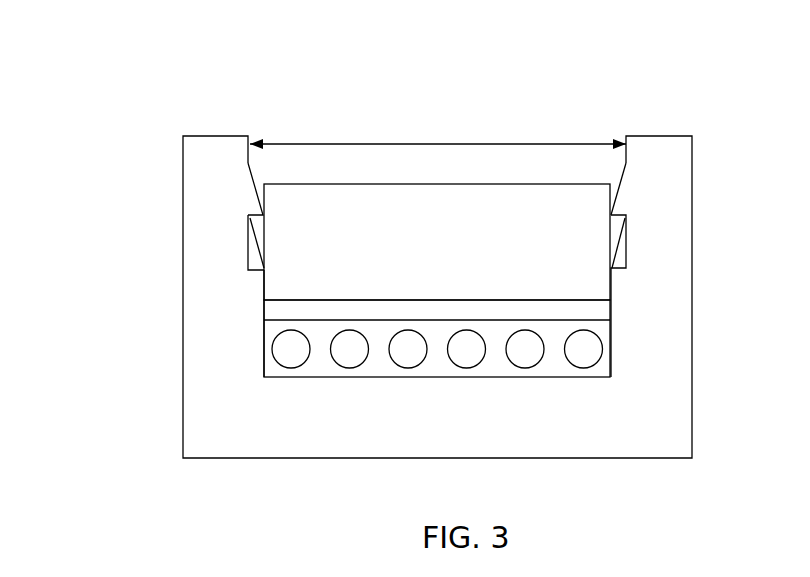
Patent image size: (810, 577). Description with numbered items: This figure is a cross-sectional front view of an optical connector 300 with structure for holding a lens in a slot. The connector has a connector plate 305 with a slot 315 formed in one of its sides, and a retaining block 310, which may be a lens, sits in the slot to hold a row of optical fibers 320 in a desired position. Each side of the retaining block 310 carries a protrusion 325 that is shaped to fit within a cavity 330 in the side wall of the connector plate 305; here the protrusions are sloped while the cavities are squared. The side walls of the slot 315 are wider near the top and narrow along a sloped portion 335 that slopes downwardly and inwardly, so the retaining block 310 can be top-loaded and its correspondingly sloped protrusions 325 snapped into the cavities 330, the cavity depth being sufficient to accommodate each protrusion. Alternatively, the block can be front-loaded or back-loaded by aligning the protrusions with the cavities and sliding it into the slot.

The optical connector 300 is at (178, 62).
The connector plate 305 is at (216, 330).
The retaining block 310 is at (585, 290).
The slot 315 is at (437, 143).
The optical fibers 320 is at (291, 355).
The protrusion 325 is at (258, 226).
The cavity 330 is at (255, 262).
The sloped portion 335 is at (617, 202).